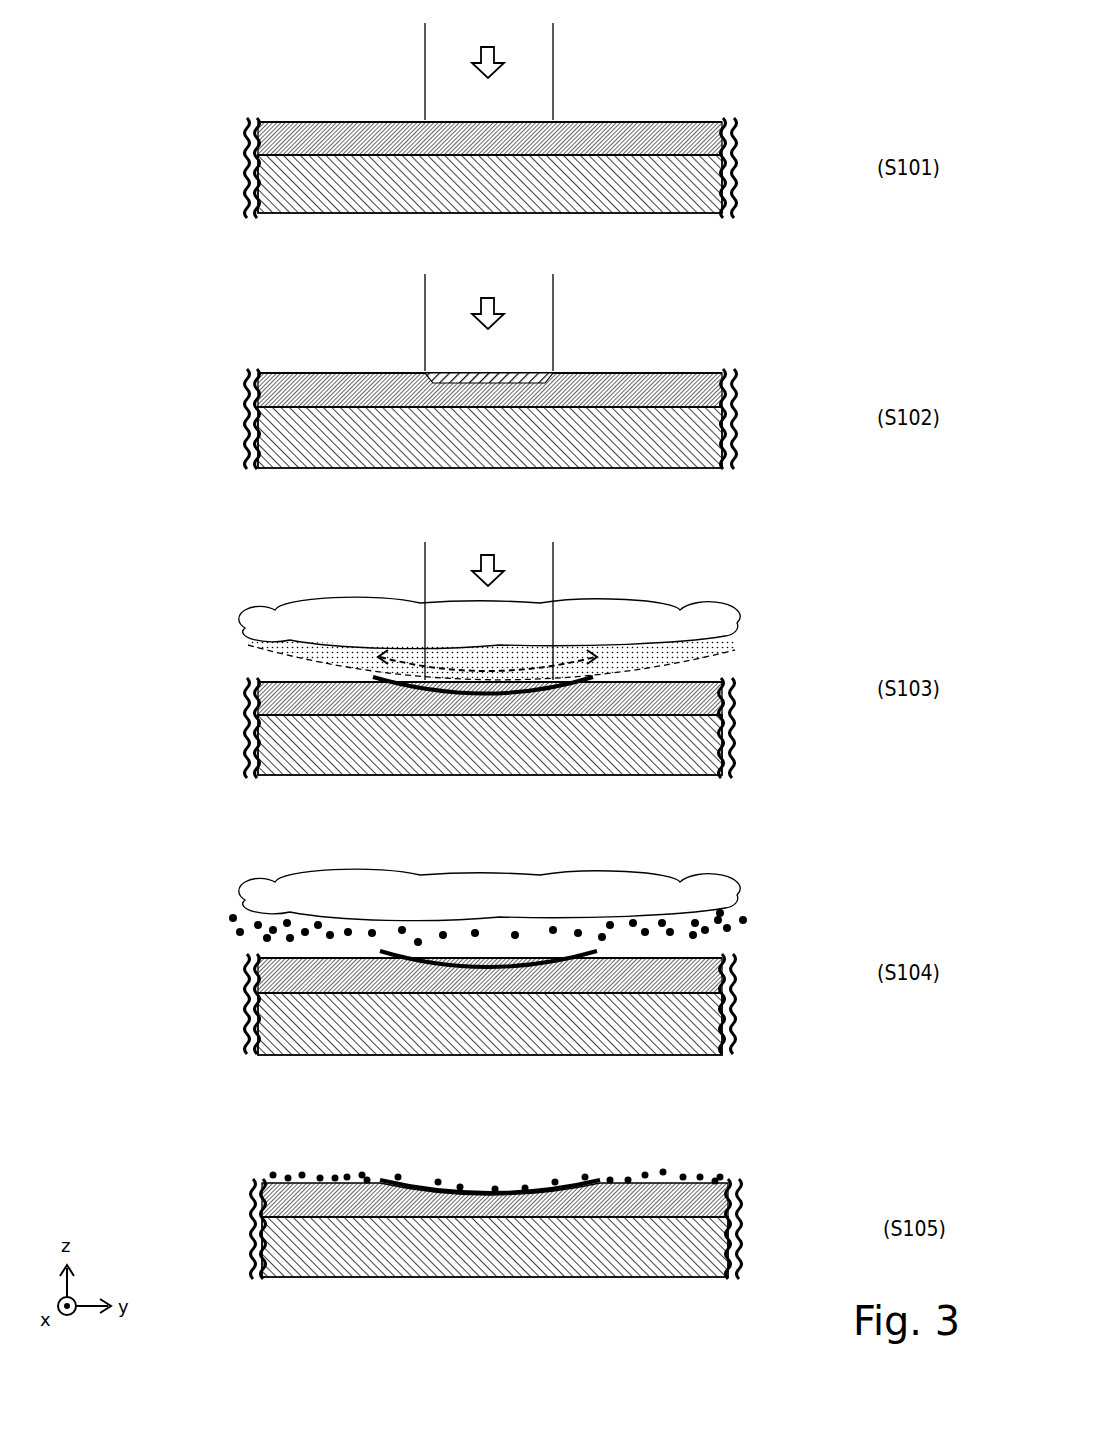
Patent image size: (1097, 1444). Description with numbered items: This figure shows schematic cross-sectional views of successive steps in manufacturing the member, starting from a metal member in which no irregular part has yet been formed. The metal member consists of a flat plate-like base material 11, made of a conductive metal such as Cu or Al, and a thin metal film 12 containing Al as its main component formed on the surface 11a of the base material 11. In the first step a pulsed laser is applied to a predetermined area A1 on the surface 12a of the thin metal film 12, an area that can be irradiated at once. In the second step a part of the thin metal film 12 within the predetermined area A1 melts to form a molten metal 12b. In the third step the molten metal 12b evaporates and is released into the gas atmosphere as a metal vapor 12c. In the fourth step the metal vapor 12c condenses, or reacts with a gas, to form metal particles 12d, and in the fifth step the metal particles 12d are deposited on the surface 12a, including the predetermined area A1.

The thin metal film 12 is at (712, 137).
The base material 11 is at (712, 178).
The surface of the thin metal film 12a is at (300, 121).
The surface of the base material 11a is at (300, 153).
The predetermined area A1 is at (488, 103).
The molten metal 12b is at (528, 372).
The metal vapor 12c is at (680, 655).
The metal particles 12d is at (728, 929).